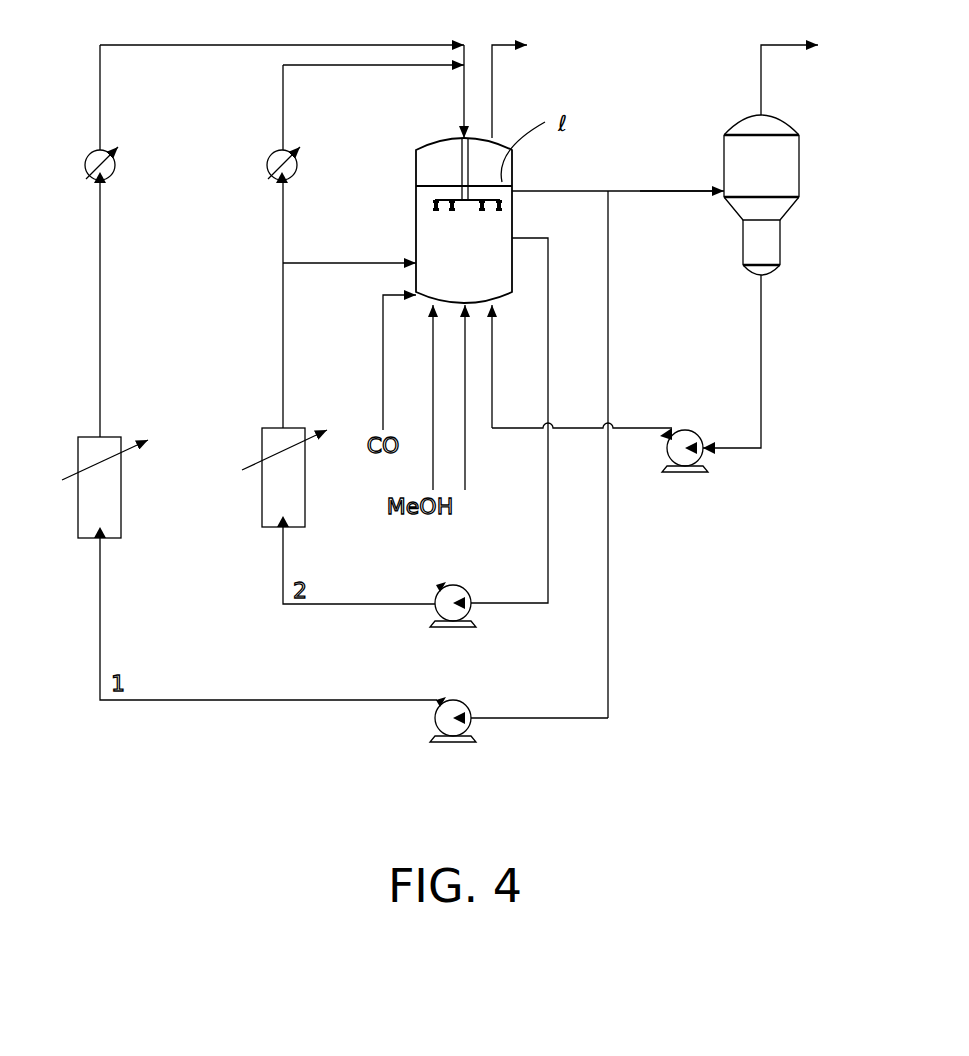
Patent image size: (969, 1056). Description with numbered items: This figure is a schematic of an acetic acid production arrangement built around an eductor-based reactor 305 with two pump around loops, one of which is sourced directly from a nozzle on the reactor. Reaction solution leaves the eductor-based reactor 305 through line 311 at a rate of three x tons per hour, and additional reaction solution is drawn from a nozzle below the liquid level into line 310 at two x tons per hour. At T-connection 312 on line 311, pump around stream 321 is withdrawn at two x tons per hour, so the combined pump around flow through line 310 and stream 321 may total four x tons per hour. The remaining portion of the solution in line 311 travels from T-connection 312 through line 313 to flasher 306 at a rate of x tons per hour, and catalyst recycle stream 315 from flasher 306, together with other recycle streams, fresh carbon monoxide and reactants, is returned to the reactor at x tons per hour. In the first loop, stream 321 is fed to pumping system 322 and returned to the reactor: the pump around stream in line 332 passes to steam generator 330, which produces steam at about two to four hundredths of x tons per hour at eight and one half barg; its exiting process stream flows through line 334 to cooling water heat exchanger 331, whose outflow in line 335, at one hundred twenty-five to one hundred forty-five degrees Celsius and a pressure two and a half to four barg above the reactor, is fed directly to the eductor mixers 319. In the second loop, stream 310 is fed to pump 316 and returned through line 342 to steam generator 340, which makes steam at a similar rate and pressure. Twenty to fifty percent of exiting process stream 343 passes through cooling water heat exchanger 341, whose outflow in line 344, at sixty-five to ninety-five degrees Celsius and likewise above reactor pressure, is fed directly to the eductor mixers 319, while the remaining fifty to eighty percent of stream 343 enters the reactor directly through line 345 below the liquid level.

The eductor-based reactor 305 is at (423, 240).
The flasher 306 is at (784, 163).
The line 310 is at (548, 398).
The line 311 is at (522, 196).
The T-connection 312 is at (612, 195).
The line 313 is at (688, 195).
The catalyst recycle stream 315 is at (761, 383).
The pump 316 is at (460, 590).
The eductor mixers 319 is at (452, 212).
The pump around stream 321 is at (608, 372).
The pumping system 322 is at (460, 707).
The steam generator 330 is at (110, 520).
The cooling water heat exchanger 331 is at (115, 172).
The line 332 is at (192, 700).
The line 334 is at (100, 298).
The line 335 is at (160, 45).
The steam generator 340 is at (290, 505).
The cooling water heat exchanger 341 is at (297, 172).
The line 342 is at (342, 604).
The exiting process stream 343 is at (283, 357).
The line 344 is at (340, 65).
The line 345 is at (305, 263).